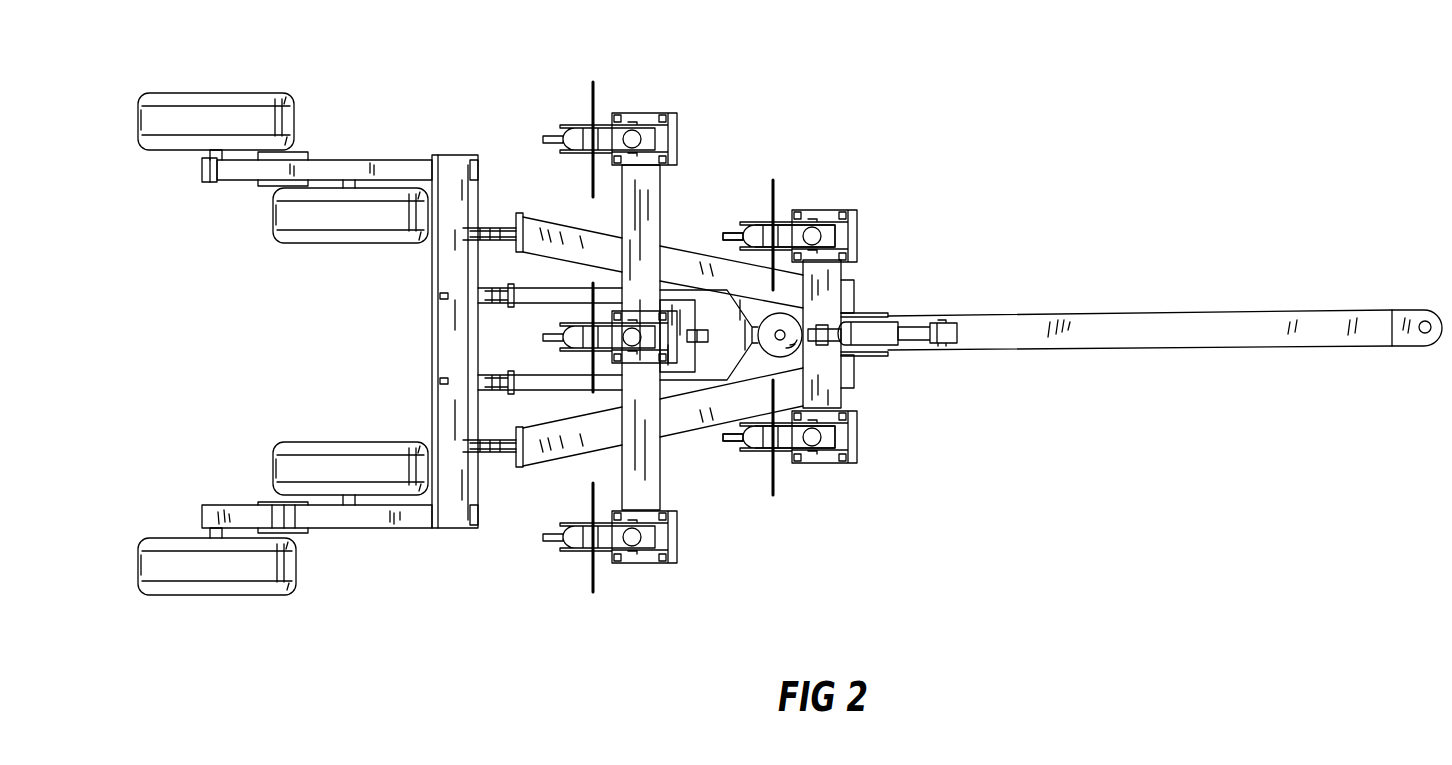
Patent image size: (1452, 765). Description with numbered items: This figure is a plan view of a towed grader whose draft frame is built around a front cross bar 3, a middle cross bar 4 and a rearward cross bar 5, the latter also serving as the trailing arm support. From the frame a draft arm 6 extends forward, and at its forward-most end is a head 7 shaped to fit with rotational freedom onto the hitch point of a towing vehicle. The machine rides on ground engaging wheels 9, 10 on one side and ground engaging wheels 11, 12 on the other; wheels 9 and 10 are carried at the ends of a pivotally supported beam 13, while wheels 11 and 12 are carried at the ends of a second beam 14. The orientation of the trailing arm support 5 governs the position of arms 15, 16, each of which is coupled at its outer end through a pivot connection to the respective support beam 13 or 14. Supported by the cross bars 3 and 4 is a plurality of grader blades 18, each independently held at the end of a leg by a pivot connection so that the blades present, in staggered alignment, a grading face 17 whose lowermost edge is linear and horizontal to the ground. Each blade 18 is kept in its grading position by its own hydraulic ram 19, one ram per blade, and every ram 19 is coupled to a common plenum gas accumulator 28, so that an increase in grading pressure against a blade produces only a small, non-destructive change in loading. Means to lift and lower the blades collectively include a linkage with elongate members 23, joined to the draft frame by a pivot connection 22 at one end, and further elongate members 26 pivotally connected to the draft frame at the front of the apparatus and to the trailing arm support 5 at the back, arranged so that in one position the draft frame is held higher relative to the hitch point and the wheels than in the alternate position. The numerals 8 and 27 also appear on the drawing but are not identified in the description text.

The front cross bar 3 is at (830, 372).
The middle cross bar 4 is at (655, 482).
The rearward cross bar 5 is at (458, 418).
The draft arm 6 is at (1080, 330).
The head 7 is at (1425, 315).
The tongue coupling 8 is at (950, 330).
The ground engaging wheel 9 is at (330, 440).
The ground engaging wheel 10 is at (222, 565).
The ground engaging wheel 11 is at (305, 223).
The ground engaging wheel 12 is at (222, 118).
The beam 13 is at (243, 515).
The beam 14 is at (243, 170).
The arm 15 is at (325, 512).
The arm 16 is at (322, 165).
The grading face 17 is at (588, 110).
The grader blade 18 is at (733, 232).
The hydraulic ram 19 is at (790, 235).
The pivot connection 22 is at (825, 330).
The elongate member 23 is at (543, 445).
The elongate member 26 is at (540, 292).
The bushing 27 is at (870, 355).
The common plenum gas accumulator 28 is at (790, 322).